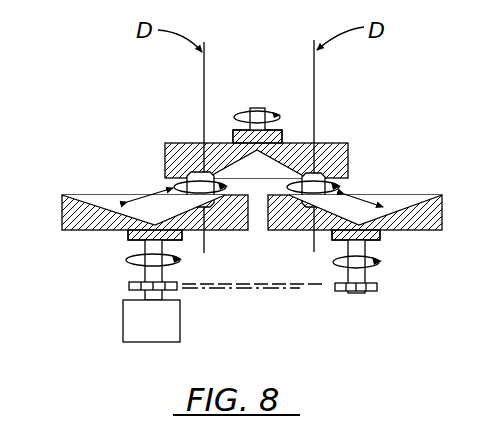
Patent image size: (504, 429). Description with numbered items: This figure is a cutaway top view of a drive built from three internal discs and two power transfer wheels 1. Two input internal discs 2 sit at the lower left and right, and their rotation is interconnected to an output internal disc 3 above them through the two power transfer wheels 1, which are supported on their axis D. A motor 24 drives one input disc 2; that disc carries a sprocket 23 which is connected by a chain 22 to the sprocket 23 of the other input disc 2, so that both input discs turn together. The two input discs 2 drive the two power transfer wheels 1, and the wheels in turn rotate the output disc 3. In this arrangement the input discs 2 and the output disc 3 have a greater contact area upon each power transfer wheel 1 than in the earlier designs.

The power transfer wheel 1 is at (207, 171).
The input internal disc 2 is at (102, 230).
The output internal disc 3 is at (324, 173).
The chain 22 is at (290, 290).
The sprocket 23 is at (123, 288).
The motor 24 is at (136, 343).